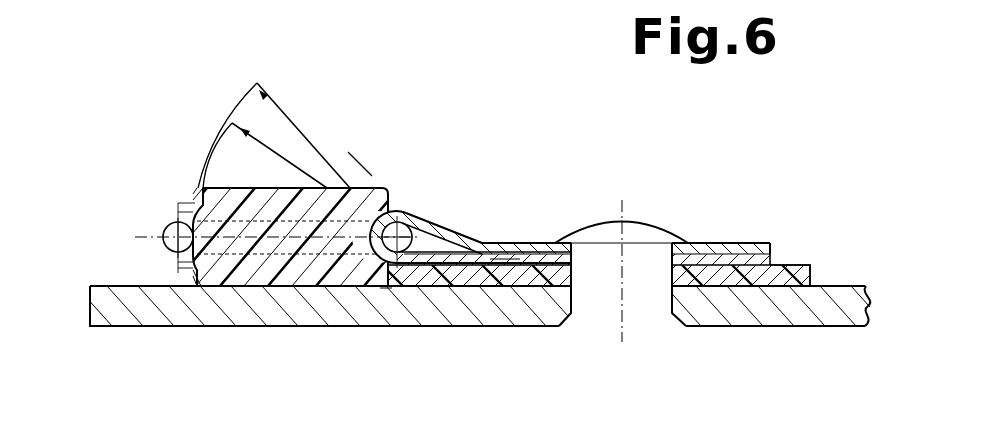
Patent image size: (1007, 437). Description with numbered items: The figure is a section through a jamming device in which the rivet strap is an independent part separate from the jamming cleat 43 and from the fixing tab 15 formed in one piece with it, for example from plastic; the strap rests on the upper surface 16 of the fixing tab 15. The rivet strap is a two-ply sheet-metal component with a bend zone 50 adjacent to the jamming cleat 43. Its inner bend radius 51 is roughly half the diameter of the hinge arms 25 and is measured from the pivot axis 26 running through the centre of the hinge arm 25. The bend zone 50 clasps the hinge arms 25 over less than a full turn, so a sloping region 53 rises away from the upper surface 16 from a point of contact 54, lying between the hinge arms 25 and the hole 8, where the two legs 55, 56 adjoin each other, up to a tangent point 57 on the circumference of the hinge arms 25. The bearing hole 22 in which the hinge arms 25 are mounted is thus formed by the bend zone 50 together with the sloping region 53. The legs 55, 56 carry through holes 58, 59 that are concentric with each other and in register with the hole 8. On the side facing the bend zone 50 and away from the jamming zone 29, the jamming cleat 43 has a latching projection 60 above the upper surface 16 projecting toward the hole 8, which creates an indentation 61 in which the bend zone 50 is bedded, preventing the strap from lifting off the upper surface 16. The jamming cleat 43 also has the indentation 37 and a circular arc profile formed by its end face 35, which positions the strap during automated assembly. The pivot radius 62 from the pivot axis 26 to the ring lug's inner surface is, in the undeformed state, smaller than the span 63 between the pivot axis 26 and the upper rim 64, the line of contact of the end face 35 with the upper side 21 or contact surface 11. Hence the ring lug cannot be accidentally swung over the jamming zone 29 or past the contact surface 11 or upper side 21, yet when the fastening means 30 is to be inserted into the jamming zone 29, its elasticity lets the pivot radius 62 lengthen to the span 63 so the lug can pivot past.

The hole 8 is at (650, 210).
The contact surface 11 is at (388, 300).
The fixing tab 15 is at (757, 280).
The upper surface 16 is at (797, 265).
The upper side 21 is at (199, 186).
The bearing hole 22 is at (424, 257).
The hinge arms 25 is at (409, 268).
The pivot axis 26 is at (409, 204).
The jamming zone 29 is at (177, 263).
The fastening means 30 is at (138, 249).
The end face 35 is at (189, 207).
The indentation 37 is at (176, 212).
The jamming cleat 43 is at (213, 215).
The bend zone 50 is at (418, 193).
The inner bend radius 51 is at (364, 173).
The sloping region 53 is at (472, 210).
The point of contact 54 is at (502, 258).
The leg 55 is at (723, 260).
The leg 56 is at (733, 246).
The tangent point 57 is at (418, 217).
The through hole 58 is at (585, 242).
The through hole 59 is at (668, 255).
The latching projection 60 is at (394, 202).
The indentation 61 is at (386, 289).
The pivot radius 62 is at (277, 155).
The span 63 is at (290, 124).
The upper rim 64 is at (192, 190).